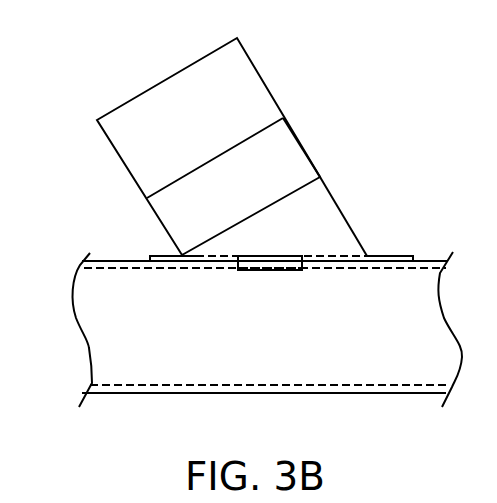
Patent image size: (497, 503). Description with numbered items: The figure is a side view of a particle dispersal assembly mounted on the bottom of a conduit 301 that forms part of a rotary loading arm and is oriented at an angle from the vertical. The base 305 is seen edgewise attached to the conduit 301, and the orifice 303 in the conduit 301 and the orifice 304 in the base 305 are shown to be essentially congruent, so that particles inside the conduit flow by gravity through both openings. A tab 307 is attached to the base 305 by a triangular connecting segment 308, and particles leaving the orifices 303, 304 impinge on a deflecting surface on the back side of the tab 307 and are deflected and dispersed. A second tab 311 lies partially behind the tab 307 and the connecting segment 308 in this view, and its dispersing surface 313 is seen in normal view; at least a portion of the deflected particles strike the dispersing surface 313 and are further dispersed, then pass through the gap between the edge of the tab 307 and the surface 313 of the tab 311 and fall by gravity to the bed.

The conduit 301 is at (110, 348).
The orifice 303 is at (272, 267).
The orifice 304 is at (272, 256).
The base 305 is at (390, 255).
The tab 307 is at (310, 138).
The triangular connecting segment 308 is at (342, 205).
The tab 311 is at (257, 70).
The dispersing surface 313 is at (175, 108).